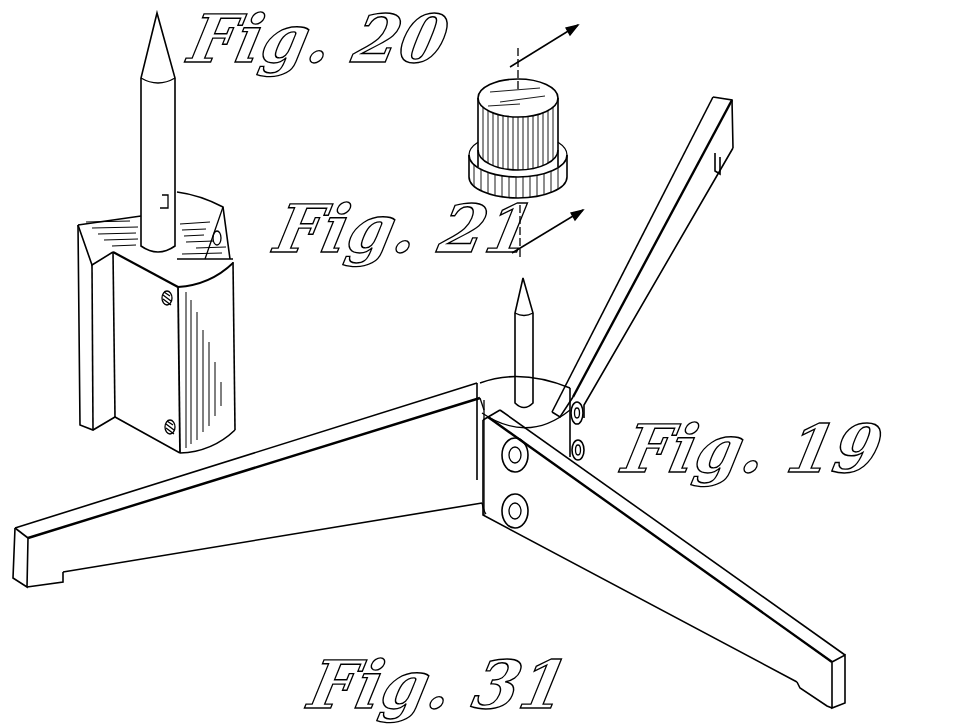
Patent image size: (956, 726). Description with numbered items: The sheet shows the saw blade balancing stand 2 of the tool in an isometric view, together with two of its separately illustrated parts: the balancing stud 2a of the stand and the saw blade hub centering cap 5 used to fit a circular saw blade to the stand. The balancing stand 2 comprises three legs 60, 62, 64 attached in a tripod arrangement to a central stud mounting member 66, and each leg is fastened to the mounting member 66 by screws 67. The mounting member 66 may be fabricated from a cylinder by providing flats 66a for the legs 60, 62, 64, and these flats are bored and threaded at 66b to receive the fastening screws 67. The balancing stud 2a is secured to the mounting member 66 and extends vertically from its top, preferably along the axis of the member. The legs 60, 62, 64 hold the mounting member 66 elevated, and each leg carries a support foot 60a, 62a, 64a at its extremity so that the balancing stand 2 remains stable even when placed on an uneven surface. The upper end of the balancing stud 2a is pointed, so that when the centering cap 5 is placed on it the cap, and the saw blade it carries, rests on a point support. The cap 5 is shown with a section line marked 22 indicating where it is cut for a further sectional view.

In FIG. 19, the saw blade balancing stand 2 is at (655, 343).
In FIG. 20, the balancing stud 2a is at (152, 140).
In FIG. 19, the balancing stud 2a is at (522, 343).
In FIG. 21, the saw blade hub centering cap 5 is at (558, 118).
In FIG. 21, the section line 22 is at (589, 134).
In FIG. 19, the leg 60 is at (356, 497).
In FIG. 19, the support foot 60a is at (106, 620).
In FIG. 19, the leg 62 is at (637, 573).
In FIG. 19, the support foot 62a is at (817, 702).
In FIG. 19, the leg 64 is at (662, 263).
In FIG. 19, the support foot 64a is at (733, 150).
In FIG. 20, the central stud mounting member 66 is at (238, 383).
In FIG. 19, the central stud mounting member 66 is at (543, 387).
In FIG. 20, the flats 66a is at (134, 418).
In FIG. 20, the bored and threaded holes 66b is at (223, 239).
In FIG. 19, the screws 67 is at (589, 450).